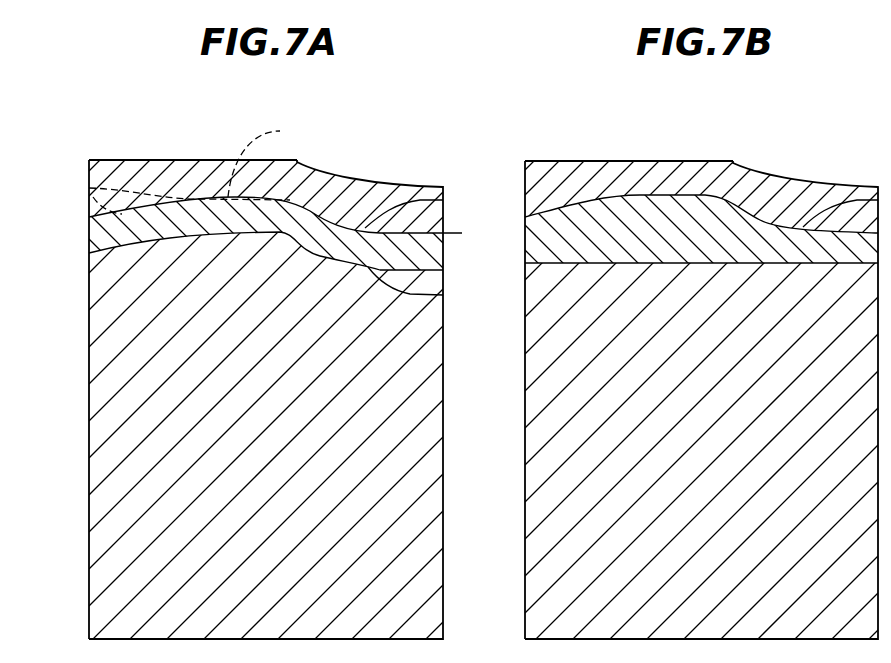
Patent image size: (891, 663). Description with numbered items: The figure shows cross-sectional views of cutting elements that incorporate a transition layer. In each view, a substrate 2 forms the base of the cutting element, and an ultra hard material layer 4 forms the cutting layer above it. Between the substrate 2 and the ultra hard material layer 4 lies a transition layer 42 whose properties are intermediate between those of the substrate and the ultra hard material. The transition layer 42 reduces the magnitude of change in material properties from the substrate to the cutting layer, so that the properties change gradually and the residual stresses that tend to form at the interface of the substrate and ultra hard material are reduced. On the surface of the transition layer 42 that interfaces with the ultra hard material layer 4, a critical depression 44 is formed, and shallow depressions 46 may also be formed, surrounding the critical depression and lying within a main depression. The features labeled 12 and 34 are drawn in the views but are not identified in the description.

In FIG. 7A, the substrate 2 is at (100, 488).
In FIG. 7B, the substrate 2 is at (545, 488).
In FIG. 7A, the ultra hard material layer 4 is at (165, 172).
In FIG. 7B, the ultra hard material layer 4 is at (600, 172).
In FIG. 7A, the upper surface of insulating layer 12 is at (361, 183).
In FIG. 7B, the upper surface of insulating layer 12 is at (796, 183).
In FIG. 7A, the recessed region 34 is at (443, 295).
In FIG. 7A, the transition layer 42 is at (108, 232).
In FIG. 7B, the transition layer 42 is at (548, 232).
In FIG. 7A, the critical depression 44 is at (443, 200).
In FIG. 7B, the critical depression 44 is at (890, 200).
In FIG. 7A, the shallow depressions 46 is at (89, 188).